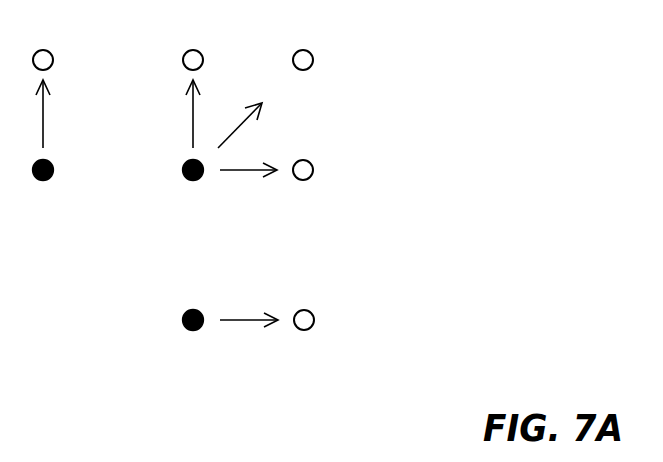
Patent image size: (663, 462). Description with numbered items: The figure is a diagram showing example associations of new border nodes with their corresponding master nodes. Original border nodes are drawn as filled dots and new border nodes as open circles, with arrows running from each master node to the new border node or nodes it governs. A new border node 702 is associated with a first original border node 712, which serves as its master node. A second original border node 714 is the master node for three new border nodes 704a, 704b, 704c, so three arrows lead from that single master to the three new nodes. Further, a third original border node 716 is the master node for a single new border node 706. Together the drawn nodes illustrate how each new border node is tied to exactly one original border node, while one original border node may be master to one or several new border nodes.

The new border node 702 is at (44, 43).
The new border node 704a is at (194, 43).
The new border node 704b is at (302, 43).
The new border node 704c is at (302, 189).
The new border node 706 is at (302, 340).
The first original border node 712 is at (44, 149).
The second original border node 714 is at (225, 149).
The third original border node 716 is at (226, 340).